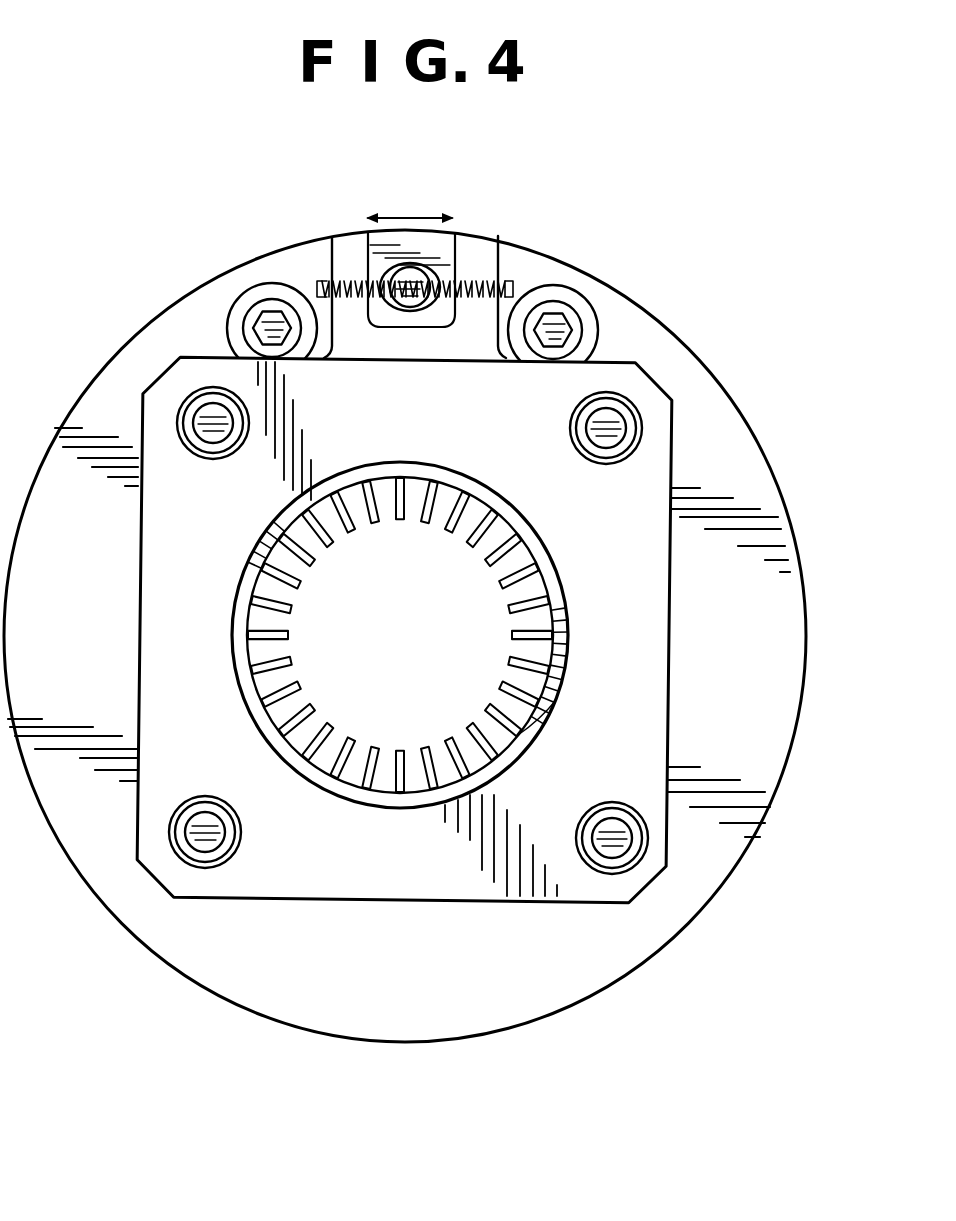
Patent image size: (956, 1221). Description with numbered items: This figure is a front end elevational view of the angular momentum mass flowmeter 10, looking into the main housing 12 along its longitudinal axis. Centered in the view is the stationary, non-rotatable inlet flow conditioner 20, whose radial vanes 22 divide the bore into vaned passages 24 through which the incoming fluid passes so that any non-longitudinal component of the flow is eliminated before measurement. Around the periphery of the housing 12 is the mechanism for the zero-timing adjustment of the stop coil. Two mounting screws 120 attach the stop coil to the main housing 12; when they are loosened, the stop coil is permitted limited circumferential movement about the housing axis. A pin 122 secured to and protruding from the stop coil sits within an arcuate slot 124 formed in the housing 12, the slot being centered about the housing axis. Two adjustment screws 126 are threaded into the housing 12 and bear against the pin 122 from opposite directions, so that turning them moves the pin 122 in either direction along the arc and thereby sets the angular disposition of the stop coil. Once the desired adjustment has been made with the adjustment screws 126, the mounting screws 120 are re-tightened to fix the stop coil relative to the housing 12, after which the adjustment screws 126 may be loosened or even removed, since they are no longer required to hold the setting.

The angular momentum mass flowmeter 10 is at (142, 293).
The main housing 12 is at (776, 479).
The inlet flow conditioner 20 is at (556, 540).
The radial vanes 22 is at (548, 643).
The vaned passages 24 is at (535, 750).
The mounting screws 120 is at (263, 317).
The pin 122 is at (380, 272).
The arcuate slot 124 is at (436, 268).
The adjustment screws 126 is at (326, 276).